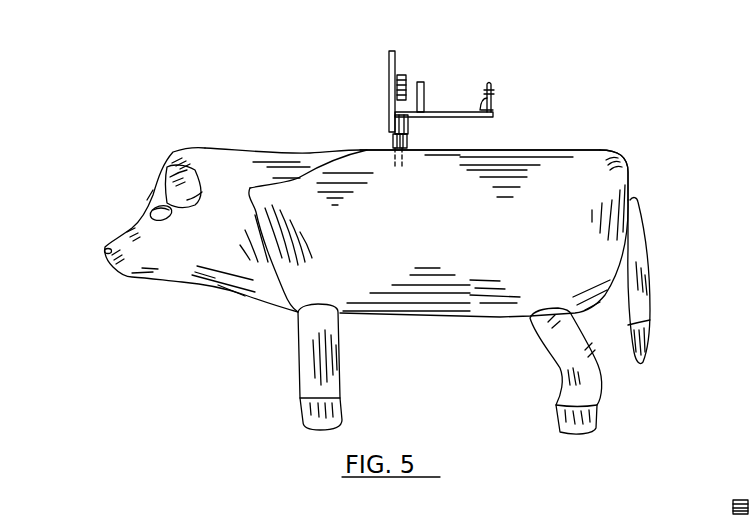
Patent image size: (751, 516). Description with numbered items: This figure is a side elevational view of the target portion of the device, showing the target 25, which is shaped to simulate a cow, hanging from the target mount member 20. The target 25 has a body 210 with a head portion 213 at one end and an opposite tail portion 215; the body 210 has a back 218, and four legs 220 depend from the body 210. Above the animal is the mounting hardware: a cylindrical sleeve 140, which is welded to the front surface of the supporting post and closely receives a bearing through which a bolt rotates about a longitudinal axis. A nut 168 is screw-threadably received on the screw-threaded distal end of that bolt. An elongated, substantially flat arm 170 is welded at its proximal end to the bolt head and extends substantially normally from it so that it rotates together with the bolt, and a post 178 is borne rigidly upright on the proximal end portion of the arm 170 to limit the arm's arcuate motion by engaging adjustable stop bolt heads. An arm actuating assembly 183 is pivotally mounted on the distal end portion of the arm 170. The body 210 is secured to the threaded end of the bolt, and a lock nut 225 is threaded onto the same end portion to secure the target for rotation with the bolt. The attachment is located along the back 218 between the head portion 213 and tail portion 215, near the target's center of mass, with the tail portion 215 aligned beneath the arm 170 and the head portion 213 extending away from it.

The target mount member 20 is at (387, 80).
The target 25 is at (652, 257).
The cylindrical sleeve 140 is at (395, 125).
The nut 168 is at (393, 138).
The arm 170 is at (448, 112).
The post 178 is at (421, 82).
The arm actuating assembly 183 is at (498, 87).
The body 210 is at (458, 197).
The head portion 213 is at (208, 160).
The tail portion 215 is at (618, 177).
The back 218 is at (483, 148).
The legs 220 is at (330, 375).
The lock nut 225 is at (407, 148).